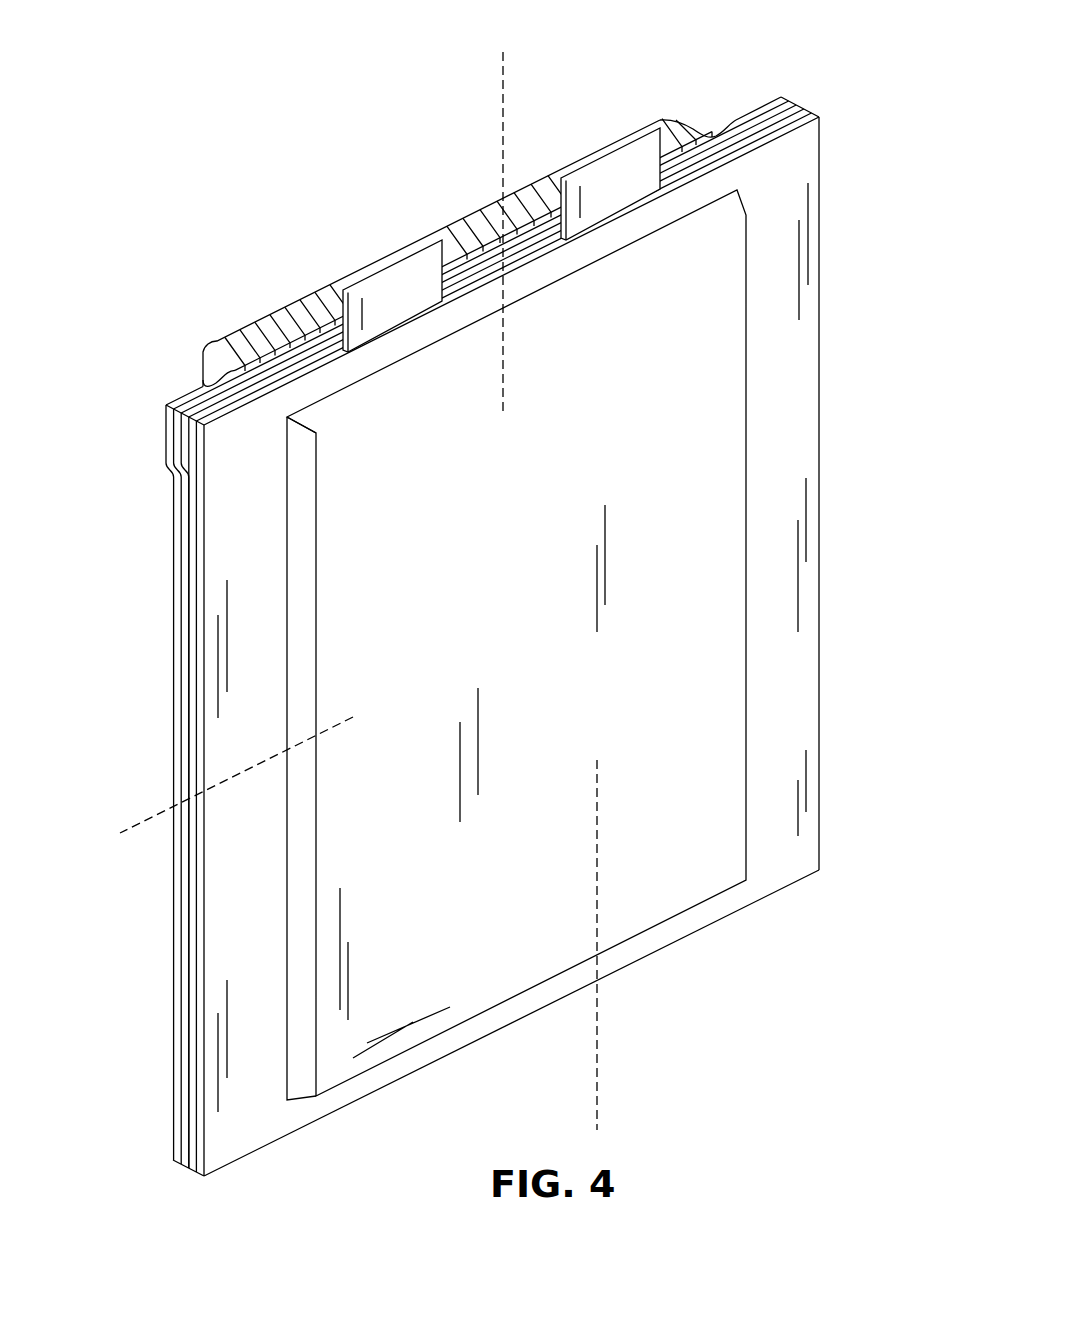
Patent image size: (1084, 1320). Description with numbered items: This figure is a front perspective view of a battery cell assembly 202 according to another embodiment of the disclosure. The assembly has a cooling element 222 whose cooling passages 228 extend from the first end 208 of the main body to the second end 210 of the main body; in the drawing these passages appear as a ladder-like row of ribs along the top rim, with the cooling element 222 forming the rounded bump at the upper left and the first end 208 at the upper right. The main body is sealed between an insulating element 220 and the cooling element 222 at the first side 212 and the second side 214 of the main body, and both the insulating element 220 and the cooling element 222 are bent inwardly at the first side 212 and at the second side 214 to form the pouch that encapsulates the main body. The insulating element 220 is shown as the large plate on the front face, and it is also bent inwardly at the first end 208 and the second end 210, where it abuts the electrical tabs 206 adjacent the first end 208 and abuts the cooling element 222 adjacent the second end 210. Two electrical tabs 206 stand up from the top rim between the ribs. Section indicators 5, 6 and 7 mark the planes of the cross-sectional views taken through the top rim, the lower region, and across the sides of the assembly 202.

The battery cell assembly 202 is at (803, 63).
The electrical tabs 206 is at (400, 282).
The first end 208 is at (729, 117).
The second end 210 is at (475, 1080).
The first side 212 is at (158, 633).
The second side 214 is at (824, 509).
The insulating element 220 is at (436, 500).
The cooling element 222 is at (200, 351).
The cooling passages 228 is at (261, 344).
The section line 5- 5 is at (503, 52).
The section line 6- 6 is at (597, 760).
The section line 7- 7 is at (353, 717).